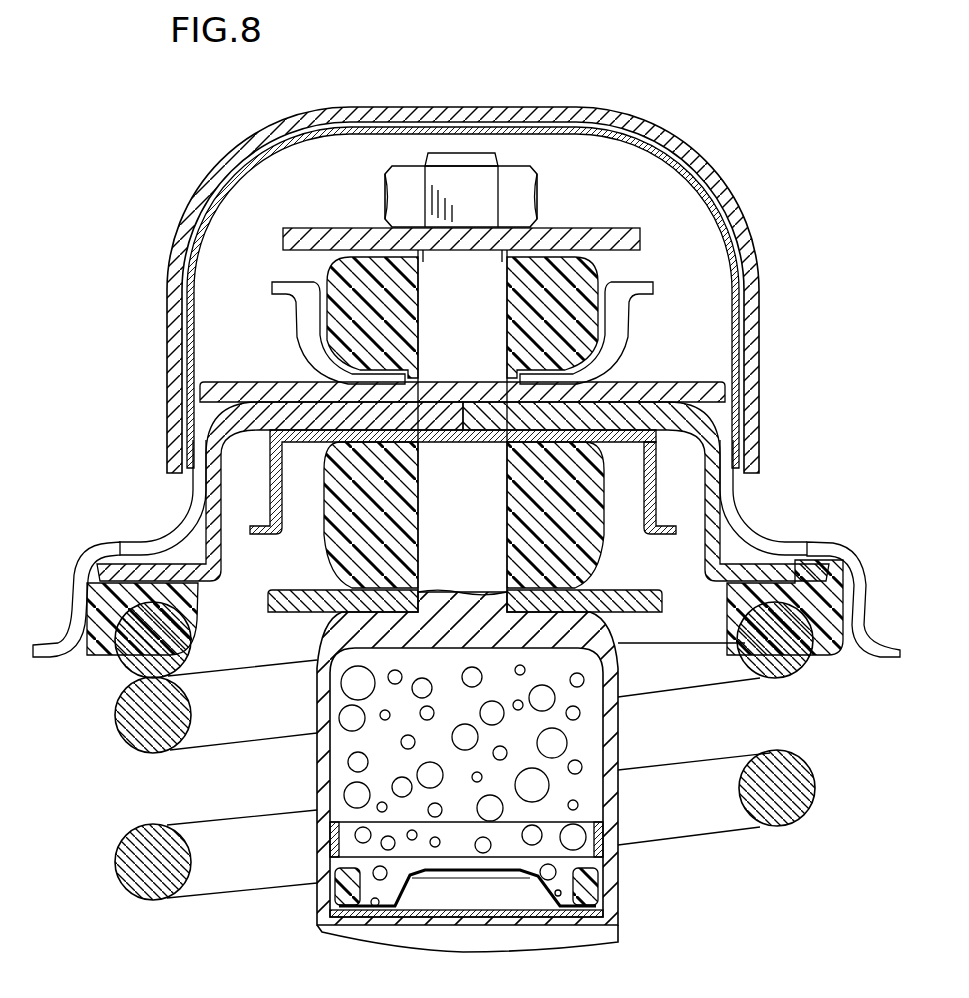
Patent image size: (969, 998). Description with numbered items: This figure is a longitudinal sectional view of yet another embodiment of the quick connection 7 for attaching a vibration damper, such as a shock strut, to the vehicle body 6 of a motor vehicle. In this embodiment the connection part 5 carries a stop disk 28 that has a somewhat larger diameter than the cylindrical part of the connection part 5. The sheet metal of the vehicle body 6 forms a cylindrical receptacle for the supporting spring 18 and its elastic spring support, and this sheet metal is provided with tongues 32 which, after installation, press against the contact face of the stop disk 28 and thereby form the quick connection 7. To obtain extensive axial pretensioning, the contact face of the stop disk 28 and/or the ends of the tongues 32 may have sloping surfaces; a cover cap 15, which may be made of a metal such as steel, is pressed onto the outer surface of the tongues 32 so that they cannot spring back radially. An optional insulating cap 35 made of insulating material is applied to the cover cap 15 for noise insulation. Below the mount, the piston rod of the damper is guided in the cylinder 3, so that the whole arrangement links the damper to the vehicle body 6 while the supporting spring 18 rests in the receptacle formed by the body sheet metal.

The cover cap 15 is at (728, 192).
The insulating cap 35 is at (746, 238).
The stop disk 28 is at (742, 384).
The quick connection 7 is at (196, 393).
The tongues 32 is at (738, 500).
The connection part 5 is at (712, 540).
The vehicle body 6 is at (887, 643).
The supporting spring 18 is at (800, 796).
The cylinder 3 is at (612, 912).